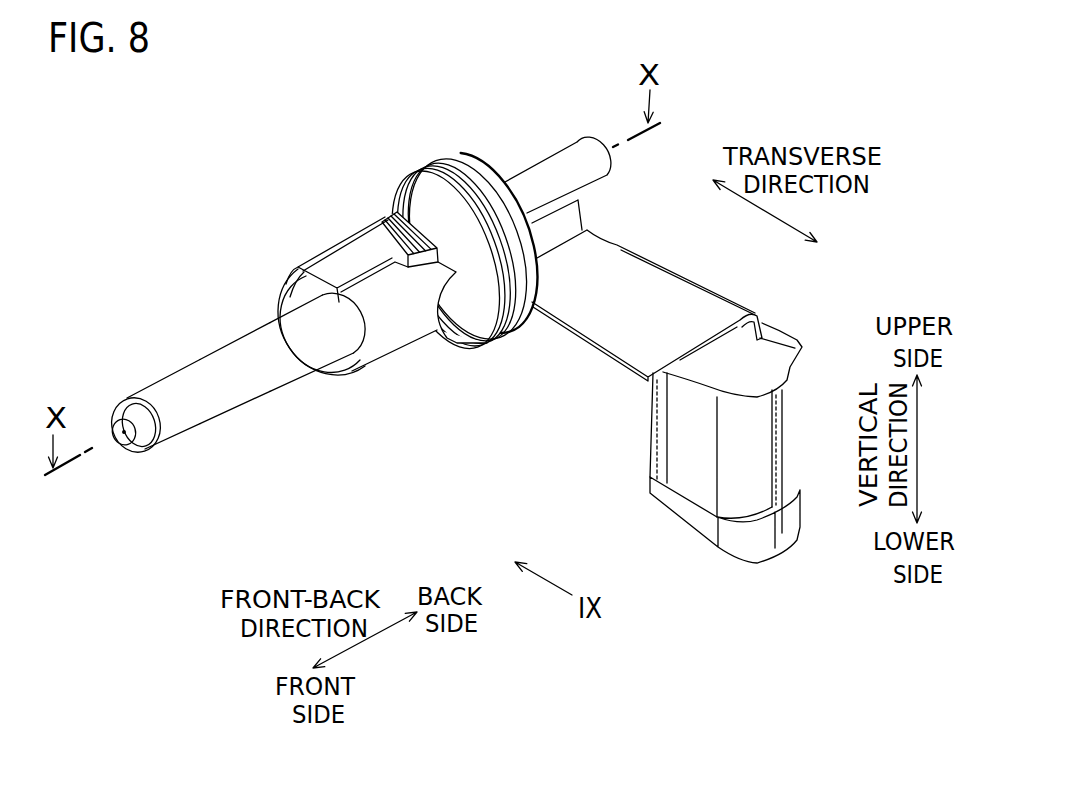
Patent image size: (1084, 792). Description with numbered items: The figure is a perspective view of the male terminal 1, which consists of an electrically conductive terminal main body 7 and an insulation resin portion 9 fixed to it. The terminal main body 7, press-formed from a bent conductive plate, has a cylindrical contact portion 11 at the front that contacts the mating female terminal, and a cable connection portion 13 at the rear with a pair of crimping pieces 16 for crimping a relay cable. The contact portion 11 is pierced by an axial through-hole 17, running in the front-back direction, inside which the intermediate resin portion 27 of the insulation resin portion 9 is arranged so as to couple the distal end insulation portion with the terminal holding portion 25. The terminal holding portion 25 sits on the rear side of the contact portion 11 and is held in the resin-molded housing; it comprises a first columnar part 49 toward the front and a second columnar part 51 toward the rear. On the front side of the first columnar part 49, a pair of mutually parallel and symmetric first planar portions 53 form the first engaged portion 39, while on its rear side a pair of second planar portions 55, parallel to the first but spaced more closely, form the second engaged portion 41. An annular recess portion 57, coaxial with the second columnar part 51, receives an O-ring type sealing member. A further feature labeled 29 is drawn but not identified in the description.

The male terminal 1 is at (296, 303).
The terminal main body 7 is at (254, 400).
The insulation resin portion 9 is at (182, 376).
The contact portion 11 is at (295, 380).
The cable connection portion 13 is at (689, 585).
The crimping pieces 16 is at (782, 438).
The through-hole 17 is at (194, 427).
The terminal holding portion 25 is at (405, 328).
The intermediate resin portion 27 is at (169, 470).
The edge portion 29 is at (331, 229).
The first engaged portion 39 is at (327, 267).
The second engaged portion 41 is at (392, 242).
The first columnar part 49 is at (375, 348).
The second columnar part 51 is at (487, 161).
The first planar portions 53 is at (362, 255).
The second planar portions 55 is at (407, 245).
The annular recess portion 57 is at (500, 295).